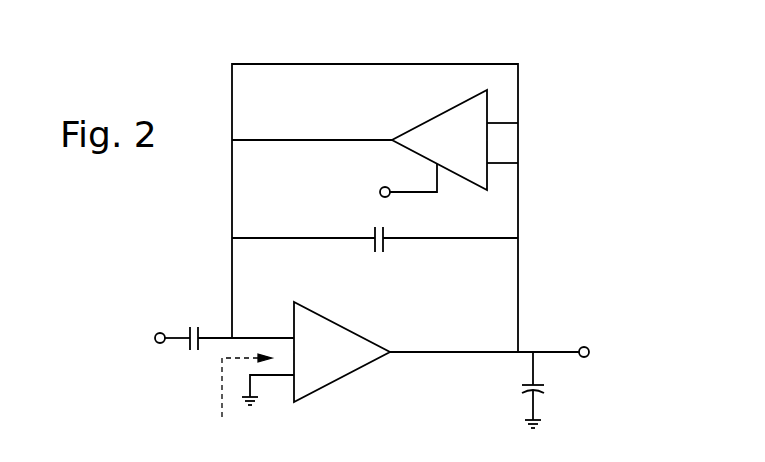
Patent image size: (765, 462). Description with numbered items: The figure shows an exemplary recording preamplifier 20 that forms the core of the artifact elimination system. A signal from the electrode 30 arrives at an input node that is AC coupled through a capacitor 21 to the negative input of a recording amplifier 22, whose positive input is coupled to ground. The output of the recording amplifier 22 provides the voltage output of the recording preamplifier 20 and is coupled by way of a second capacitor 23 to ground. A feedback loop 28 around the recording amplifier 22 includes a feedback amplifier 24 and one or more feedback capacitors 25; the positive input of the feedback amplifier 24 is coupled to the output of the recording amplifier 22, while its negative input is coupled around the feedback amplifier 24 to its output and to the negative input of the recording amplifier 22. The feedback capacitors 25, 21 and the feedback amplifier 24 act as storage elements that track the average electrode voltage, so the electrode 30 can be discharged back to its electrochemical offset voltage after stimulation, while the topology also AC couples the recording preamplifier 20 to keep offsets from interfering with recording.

The recording preamplifier 20 is at (649, 180).
The capacitor 21 is at (190, 327).
The recording amplifier 22 is at (340, 322).
The second capacitor 23 is at (525, 393).
The feedback amplifier 24 is at (425, 122).
The feedback capacitor 25 is at (386, 228).
The feedback loop 28 is at (417, 185).
The electrode 30 is at (101, 341).